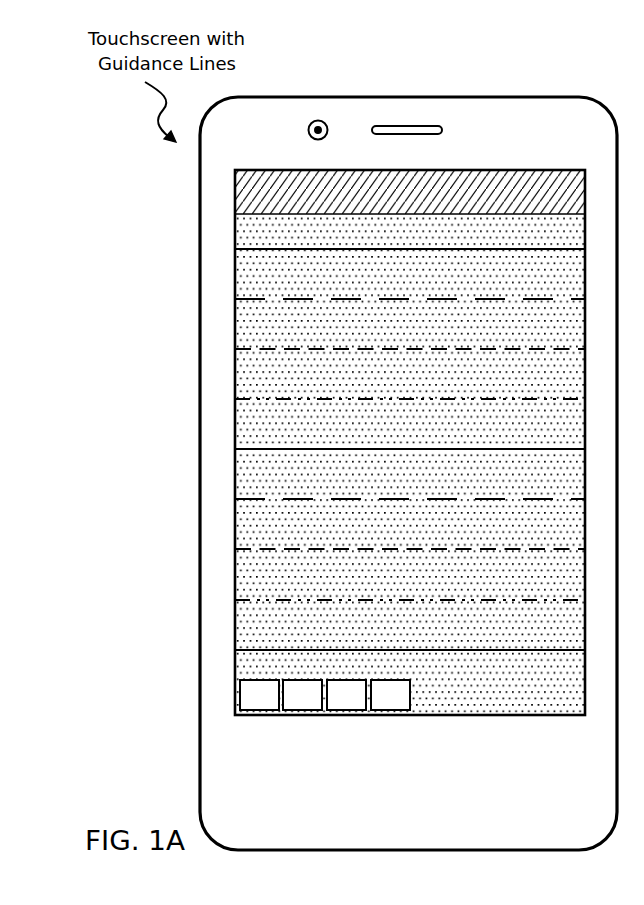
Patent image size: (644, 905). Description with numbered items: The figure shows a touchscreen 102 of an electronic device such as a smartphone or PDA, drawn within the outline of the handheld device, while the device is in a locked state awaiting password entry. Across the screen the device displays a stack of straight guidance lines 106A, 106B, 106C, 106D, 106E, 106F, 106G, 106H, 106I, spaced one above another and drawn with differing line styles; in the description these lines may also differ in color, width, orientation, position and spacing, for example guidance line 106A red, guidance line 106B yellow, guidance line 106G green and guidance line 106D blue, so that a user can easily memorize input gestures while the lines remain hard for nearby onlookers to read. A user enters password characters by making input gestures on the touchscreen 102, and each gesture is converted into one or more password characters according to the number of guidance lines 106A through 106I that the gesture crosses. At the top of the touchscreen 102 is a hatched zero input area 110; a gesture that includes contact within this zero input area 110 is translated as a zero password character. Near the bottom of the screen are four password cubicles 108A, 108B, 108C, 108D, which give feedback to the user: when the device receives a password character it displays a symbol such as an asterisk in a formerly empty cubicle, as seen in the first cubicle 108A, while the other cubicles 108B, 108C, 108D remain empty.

The touchscreen 102 is at (235, 170).
The "0" input area 110 is at (297, 201).
The guidance line 106A is at (500, 250).
The guidance line 106B is at (500, 300).
The guidance line 106C is at (500, 350).
The guidance line 106D is at (500, 400).
The guidance line 106E is at (500, 450).
The guidance line 106F is at (500, 500).
The guidance line 106G is at (500, 550).
The guidance line 106H is at (500, 601).
The guidance line 106I is at (508, 651).
The password cubicle 108A is at (258, 679).
The password cubicle 108B is at (300, 710).
The password cubicle 108C is at (344, 679).
The password cubicle 108D is at (390, 710).